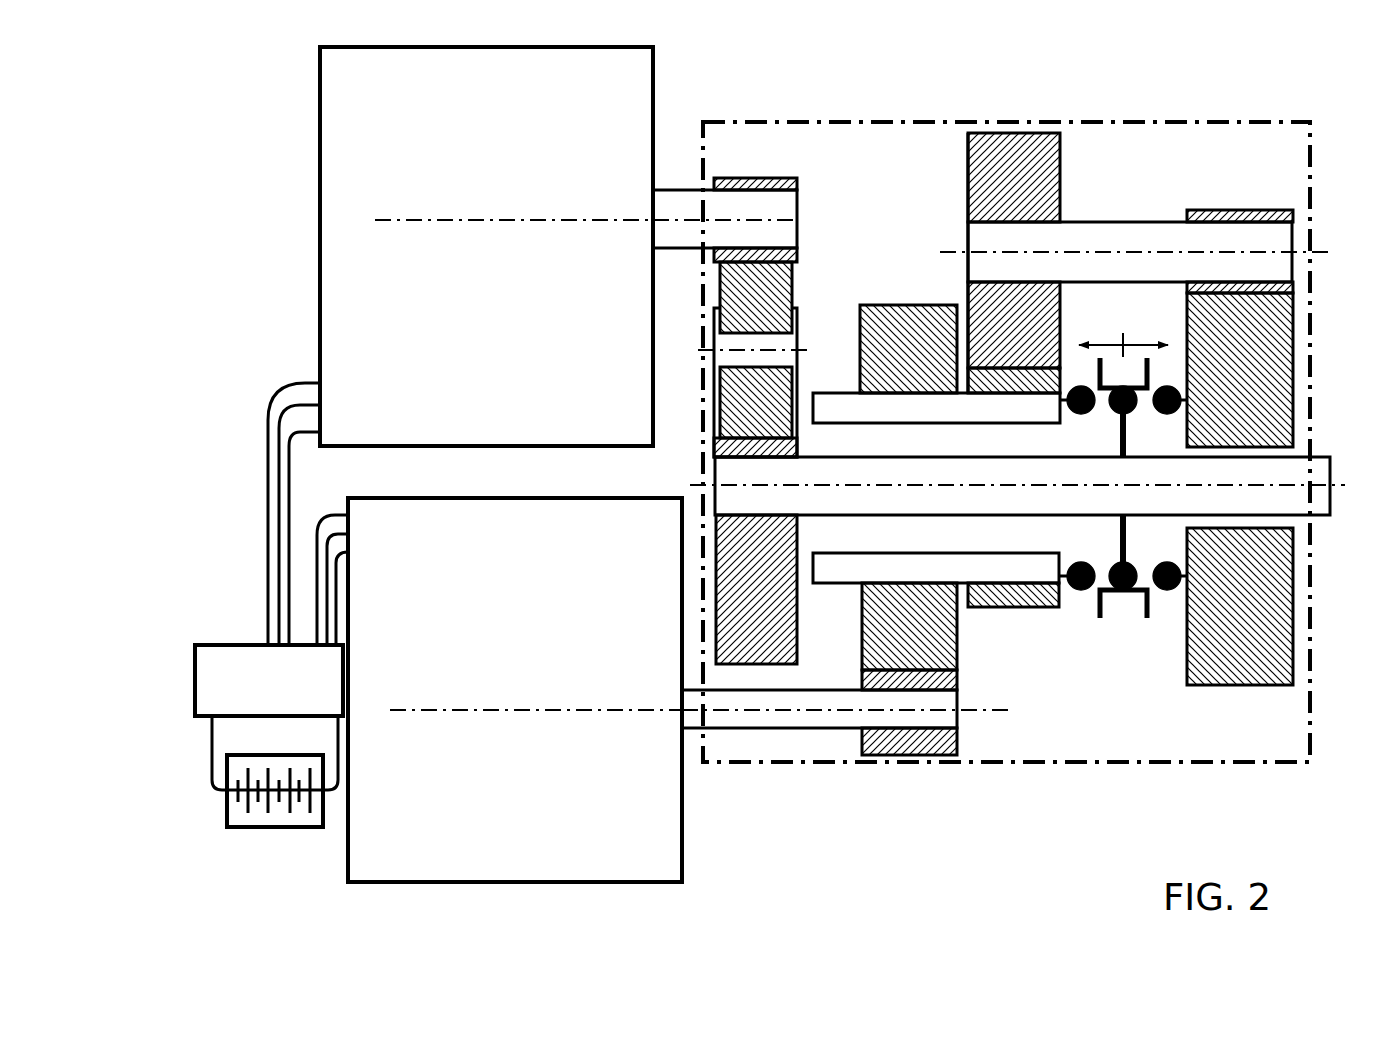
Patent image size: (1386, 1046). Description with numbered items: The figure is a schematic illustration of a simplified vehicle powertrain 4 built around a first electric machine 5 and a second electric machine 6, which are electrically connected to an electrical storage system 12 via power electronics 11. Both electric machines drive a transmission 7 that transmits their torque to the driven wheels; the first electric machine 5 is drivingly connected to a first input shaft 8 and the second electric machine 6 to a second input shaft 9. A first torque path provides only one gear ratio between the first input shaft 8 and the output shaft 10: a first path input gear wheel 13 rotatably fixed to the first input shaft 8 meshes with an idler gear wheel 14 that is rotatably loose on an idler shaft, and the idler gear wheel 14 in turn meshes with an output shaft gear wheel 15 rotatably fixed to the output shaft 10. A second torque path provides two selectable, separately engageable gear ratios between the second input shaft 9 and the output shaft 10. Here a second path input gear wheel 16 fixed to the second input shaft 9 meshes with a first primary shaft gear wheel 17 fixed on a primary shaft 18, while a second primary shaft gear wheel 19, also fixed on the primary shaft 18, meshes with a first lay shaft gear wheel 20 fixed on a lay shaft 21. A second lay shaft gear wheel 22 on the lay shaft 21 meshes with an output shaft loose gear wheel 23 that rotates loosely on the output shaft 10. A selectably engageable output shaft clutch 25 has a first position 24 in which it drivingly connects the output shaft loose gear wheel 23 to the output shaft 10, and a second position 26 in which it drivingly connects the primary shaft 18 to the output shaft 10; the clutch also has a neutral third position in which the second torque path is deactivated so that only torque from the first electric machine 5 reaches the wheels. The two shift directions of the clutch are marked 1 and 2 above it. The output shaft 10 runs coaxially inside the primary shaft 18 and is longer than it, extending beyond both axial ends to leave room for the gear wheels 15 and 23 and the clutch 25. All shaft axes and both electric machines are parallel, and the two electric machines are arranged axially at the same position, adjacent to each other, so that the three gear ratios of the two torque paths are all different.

The first shift direction 1 is at (1147, 333).
The second shift direction 2 is at (1101, 327).
The vehicle powertrain 4 is at (1130, 53).
The first electric machine 5 is at (318, 112).
The second electric machine 6 is at (688, 877).
The transmission 7 is at (1220, 118).
The first input shaft 8 is at (675, 188).
The second input shaft 9 is at (772, 733).
The output shaft 10 is at (1298, 518).
The power electronics 11 is at (235, 643).
The electrical storage system 12 is at (253, 829).
The first path input gear wheel 13 is at (730, 177).
The idler gear wheel 14 is at (792, 290).
The output shaft gear wheel 15 is at (797, 435).
The second path input gear wheel 16 is at (888, 758).
The first primary shaft gear wheel 17 is at (887, 303).
The primary shaft 18 is at (962, 587).
The second primary shaft gear wheel 19 is at (1013, 610).
The first lay shaft gear wheel 20 is at (966, 183).
The lay shaft 21 is at (1084, 220).
The second lay shaft gear wheel 22 is at (1210, 207).
The output shaft loose gear wheel 23 is at (1215, 687).
The first position 24 is at (1171, 590).
The output shaft clutch 25 is at (1123, 595).
The second position 26 is at (1081, 592).